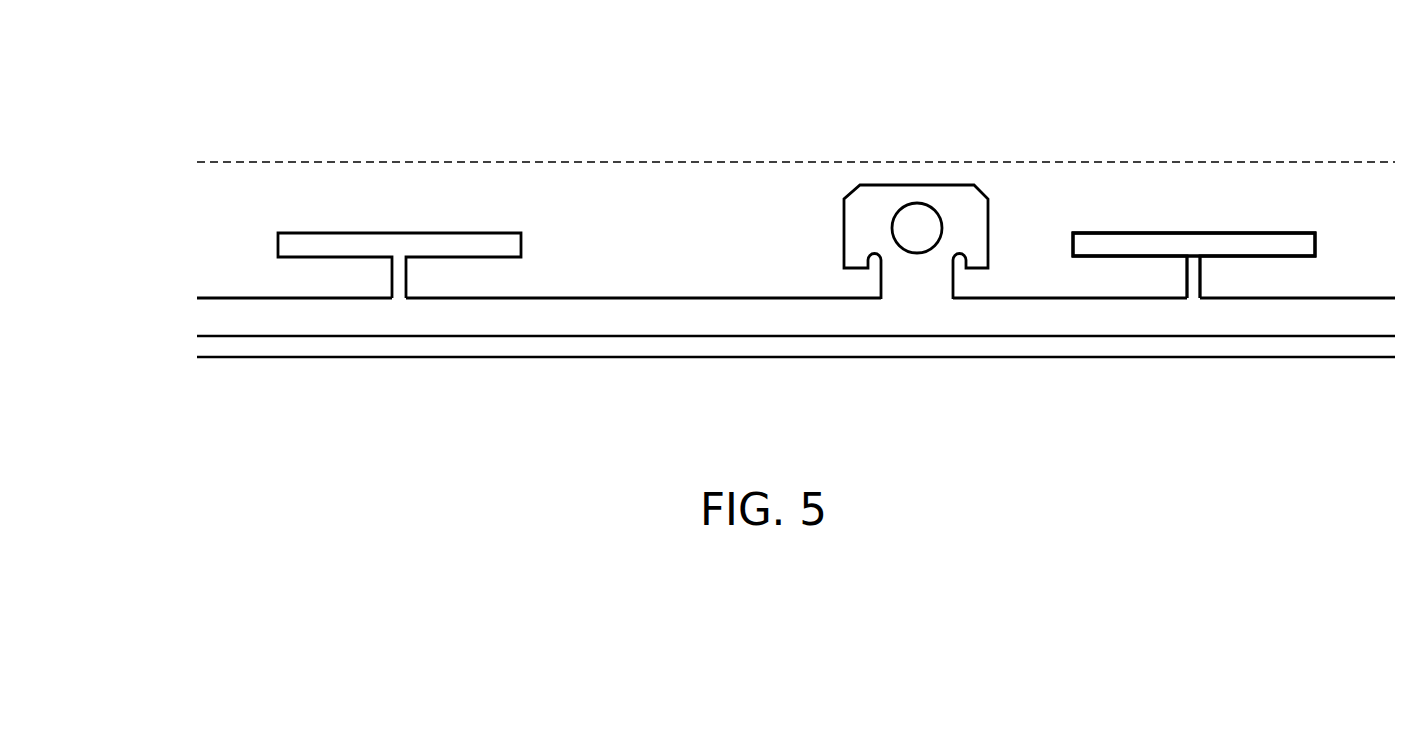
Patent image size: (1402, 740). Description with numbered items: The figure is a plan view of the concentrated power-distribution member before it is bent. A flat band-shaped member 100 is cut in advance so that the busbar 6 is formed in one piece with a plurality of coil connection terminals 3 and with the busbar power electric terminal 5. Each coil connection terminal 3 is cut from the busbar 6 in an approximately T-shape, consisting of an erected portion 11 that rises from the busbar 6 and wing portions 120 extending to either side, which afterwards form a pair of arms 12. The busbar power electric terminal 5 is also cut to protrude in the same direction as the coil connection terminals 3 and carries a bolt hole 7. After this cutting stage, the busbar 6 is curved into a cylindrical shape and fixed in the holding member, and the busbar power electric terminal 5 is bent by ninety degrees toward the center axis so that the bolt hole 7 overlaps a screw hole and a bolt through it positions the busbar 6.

The band-shaped member 100 is at (512, 162).
The busbar 6 is at (668, 313).
The busbar power electric terminal 5 is at (865, 215).
The bolt hole 7 is at (917, 218).
The coil connection terminal 3 is at (1097, 203).
The wing portion 120 is at (1238, 242).
The pair of arms 12 is at (1194, 244).
The erected portion 11 is at (1201, 278).